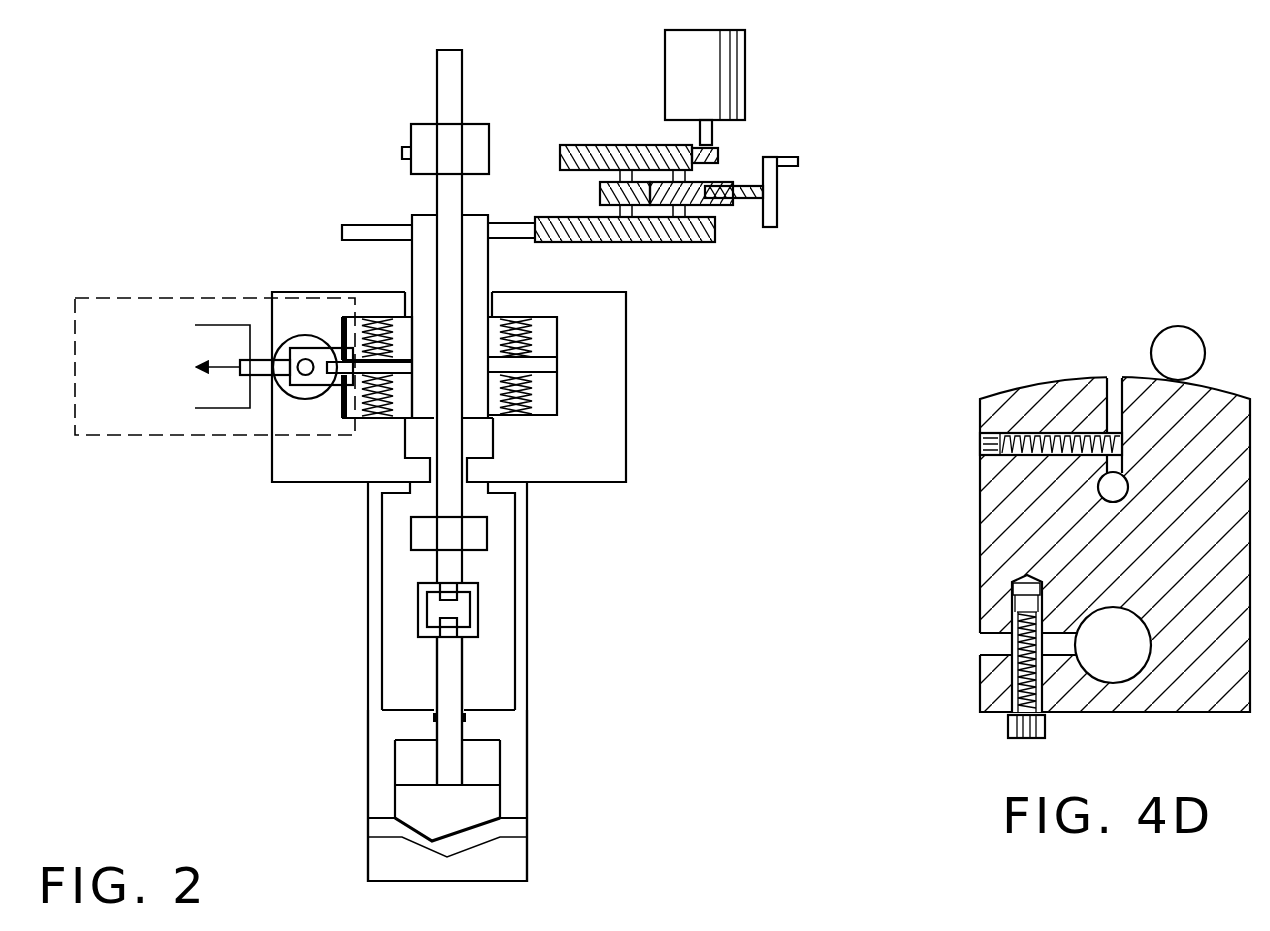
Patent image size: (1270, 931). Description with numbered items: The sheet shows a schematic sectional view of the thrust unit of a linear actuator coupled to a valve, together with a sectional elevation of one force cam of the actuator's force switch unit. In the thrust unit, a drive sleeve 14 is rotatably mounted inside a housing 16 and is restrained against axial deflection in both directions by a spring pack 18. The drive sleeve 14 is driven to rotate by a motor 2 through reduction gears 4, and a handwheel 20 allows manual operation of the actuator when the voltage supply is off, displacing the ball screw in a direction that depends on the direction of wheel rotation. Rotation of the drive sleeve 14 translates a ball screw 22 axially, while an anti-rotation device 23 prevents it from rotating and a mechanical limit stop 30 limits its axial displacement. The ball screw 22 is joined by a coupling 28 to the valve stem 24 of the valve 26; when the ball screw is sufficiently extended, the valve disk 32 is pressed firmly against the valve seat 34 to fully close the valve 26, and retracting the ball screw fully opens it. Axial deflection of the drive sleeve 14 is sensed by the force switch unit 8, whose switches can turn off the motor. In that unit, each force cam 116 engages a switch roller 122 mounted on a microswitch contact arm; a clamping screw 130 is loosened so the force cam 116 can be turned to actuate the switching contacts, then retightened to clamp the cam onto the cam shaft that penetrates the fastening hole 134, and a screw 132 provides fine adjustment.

In FIG. 2, the motor 2 is at (745, 80).
In FIG. 2, the reduction gears 4 is at (615, 128).
In FIG. 2, the force switch unit 8 is at (225, 450).
In FIG. 2, the drive sleeve 14 is at (472, 407).
In FIG. 2, the housing 16 is at (627, 430).
In FIG. 2, the spring pack 18 is at (532, 378).
In FIG. 2, the handwheel 20 is at (768, 228).
In FIG. 2, the ball screw 22 is at (450, 560).
In FIG. 2, the anti-rotation device 23 is at (411, 136).
In FIG. 2, the valve stem 24 is at (463, 680).
In FIG. 2, the valve 26 is at (536, 752).
In FIG. 2, the coupling 28 is at (478, 613).
In FIG. 2, the mechanical limit stop 30 is at (488, 533).
In FIG. 2, the valve disk 32 is at (399, 834).
In FIG. 2, the valve seat 34 is at (445, 835).
In FIG. 4D, the force cam 116 is at (1027, 392).
In FIG. 4D, the switch roller 122 is at (1153, 338).
In FIG. 4D, the clamping screw 130 is at (1005, 727).
In FIG. 4D, the screw 132 is at (980, 443).
In FIG. 4D, the fastening hole 134 is at (1113, 660).